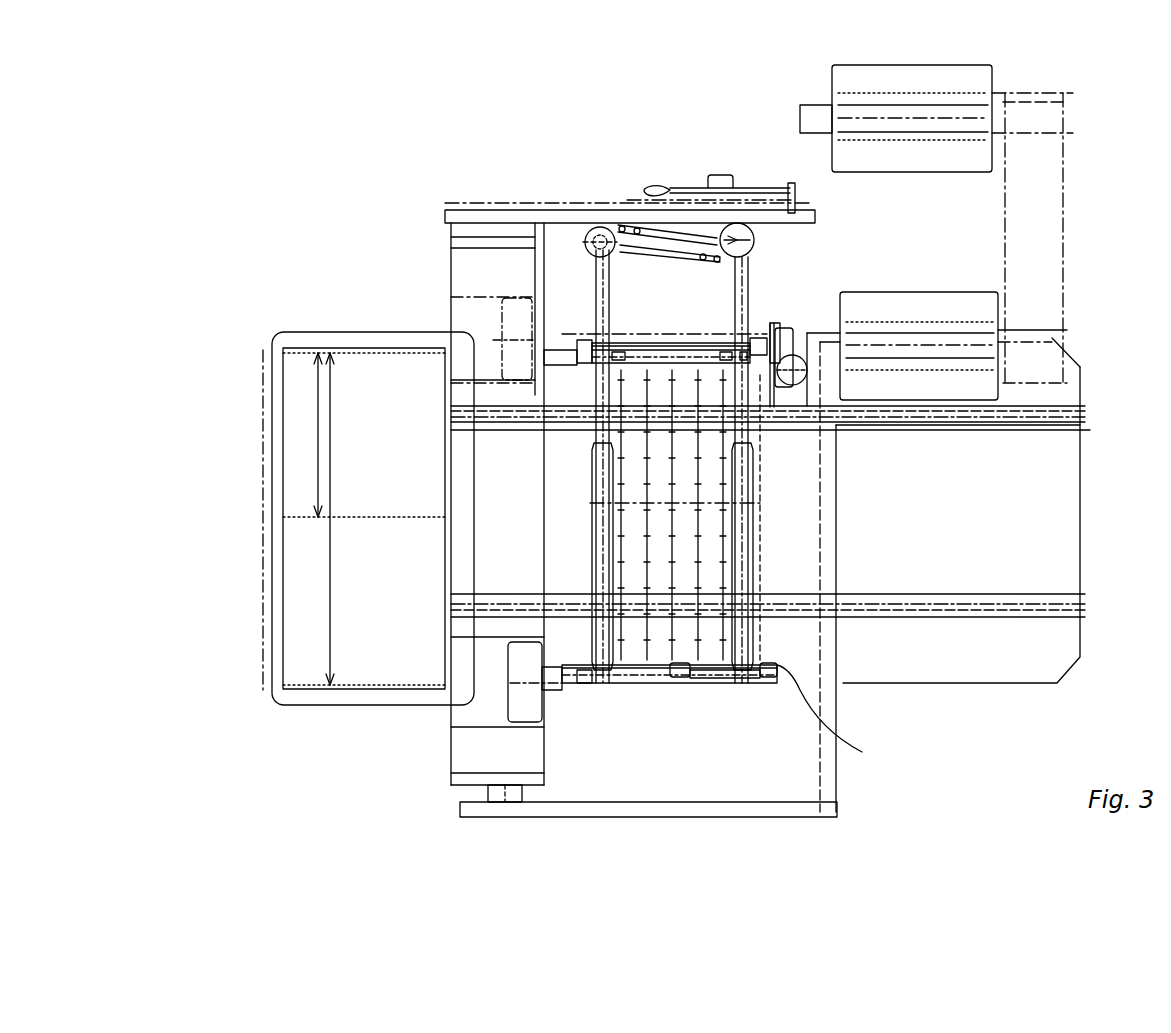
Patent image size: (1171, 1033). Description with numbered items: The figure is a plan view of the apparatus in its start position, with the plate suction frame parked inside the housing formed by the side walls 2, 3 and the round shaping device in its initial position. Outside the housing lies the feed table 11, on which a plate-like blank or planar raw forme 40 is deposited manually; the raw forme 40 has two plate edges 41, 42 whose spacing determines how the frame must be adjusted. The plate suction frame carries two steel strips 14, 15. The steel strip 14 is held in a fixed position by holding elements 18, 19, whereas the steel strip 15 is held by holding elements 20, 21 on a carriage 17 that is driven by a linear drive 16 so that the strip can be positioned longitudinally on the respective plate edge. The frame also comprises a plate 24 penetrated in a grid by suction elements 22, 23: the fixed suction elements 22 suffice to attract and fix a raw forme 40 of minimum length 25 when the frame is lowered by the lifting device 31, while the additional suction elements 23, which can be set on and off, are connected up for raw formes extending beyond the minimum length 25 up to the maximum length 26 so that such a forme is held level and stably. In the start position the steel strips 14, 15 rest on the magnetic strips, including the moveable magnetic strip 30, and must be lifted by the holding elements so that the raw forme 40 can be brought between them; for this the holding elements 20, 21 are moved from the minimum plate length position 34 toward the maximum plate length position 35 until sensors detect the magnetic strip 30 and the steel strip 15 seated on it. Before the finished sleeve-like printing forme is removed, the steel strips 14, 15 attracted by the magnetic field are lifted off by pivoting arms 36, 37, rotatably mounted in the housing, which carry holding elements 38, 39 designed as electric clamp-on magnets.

The side wall 2 is at (527, 218).
The side wall 3 is at (684, 808).
The feed table 11 is at (287, 340).
The steel strip 14 is at (705, 353).
The steel strip 15 is at (717, 673).
The linear drive 16 is at (750, 583).
The carriage 17 is at (757, 683).
The holding element 18 is at (740, 338).
The holding element 19 is at (600, 340).
The holding element 20 is at (743, 673).
The holding element 21 is at (603, 690).
The suction element 22 is at (723, 460).
The suction element 23 is at (700, 527).
The plate 24 is at (708, 560).
The minimum length 25 is at (318, 443).
The maximum length 26 is at (332, 600).
The magnetic strip 30 is at (862, 752).
The lifting device 31 is at (667, 345).
The minimum plate length position 34 is at (638, 504).
The maximum plate length position 35 is at (632, 684).
The pivoting arm 36 is at (600, 226).
The pivoting arm 37 is at (755, 240).
The holding element 38 is at (707, 223).
The holding element 39 is at (640, 224).
The raw forme 40 is at (312, 543).
The plate edge 41 is at (364, 346).
The plate edge 42 is at (367, 693).